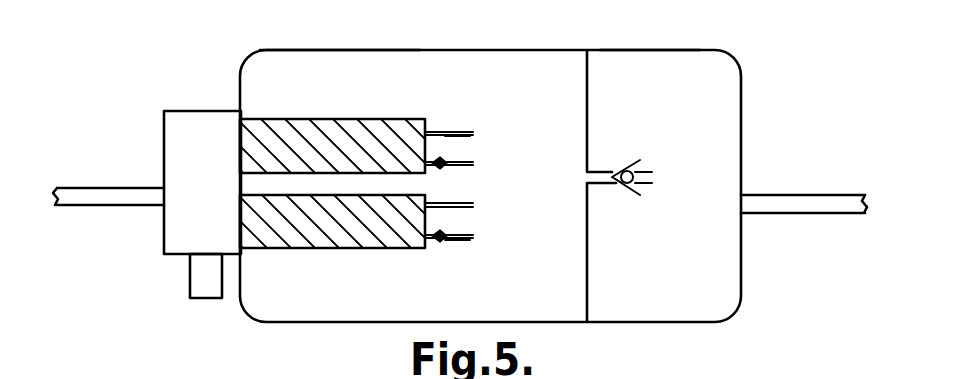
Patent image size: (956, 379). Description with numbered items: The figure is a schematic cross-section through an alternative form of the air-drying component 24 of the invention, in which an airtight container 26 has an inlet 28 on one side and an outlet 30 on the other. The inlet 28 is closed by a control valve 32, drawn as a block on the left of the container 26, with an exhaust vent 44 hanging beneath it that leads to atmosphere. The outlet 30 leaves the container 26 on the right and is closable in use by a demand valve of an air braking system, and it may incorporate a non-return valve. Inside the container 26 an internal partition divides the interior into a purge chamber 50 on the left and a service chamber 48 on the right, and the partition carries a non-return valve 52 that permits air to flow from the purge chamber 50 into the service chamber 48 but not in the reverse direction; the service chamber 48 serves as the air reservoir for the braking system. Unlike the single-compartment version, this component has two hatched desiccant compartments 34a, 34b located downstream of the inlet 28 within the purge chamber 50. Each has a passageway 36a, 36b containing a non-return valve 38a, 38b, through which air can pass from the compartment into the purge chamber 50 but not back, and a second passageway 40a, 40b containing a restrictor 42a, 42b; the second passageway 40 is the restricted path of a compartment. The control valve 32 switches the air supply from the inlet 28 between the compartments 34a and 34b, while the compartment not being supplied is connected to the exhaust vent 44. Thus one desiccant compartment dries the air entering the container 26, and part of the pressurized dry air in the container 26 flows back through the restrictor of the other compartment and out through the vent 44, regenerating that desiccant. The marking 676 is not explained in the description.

The component 24 is at (520, 41).
The airtight container 26 is at (733, 60).
The inlet 28 is at (98, 188).
The outlet 30 is at (811, 206).
The control valve 32 is at (164, 236).
The desiccant compartment 34a is at (298, 118).
The desiccant compartment 34b is at (341, 249).
The passageway 36a is at (449, 160).
The passageway 36b is at (462, 238).
The non-return valve 38a is at (450, 137).
The non-return valve 38b is at (448, 244).
The second passageway 40 is at (587, 117).
The passageway 40a is at (459, 130).
The passageway 40b is at (472, 212).
The restrictor 42a is at (437, 131).
The restrictor 42b is at (450, 190).
The exhaust vent 44 is at (206, 299).
The service chamber 48 is at (667, 53).
The purge chamber 50 is at (287, 51).
The non-return valve 52 is at (625, 184).
The reference 676 is at (403, 11).